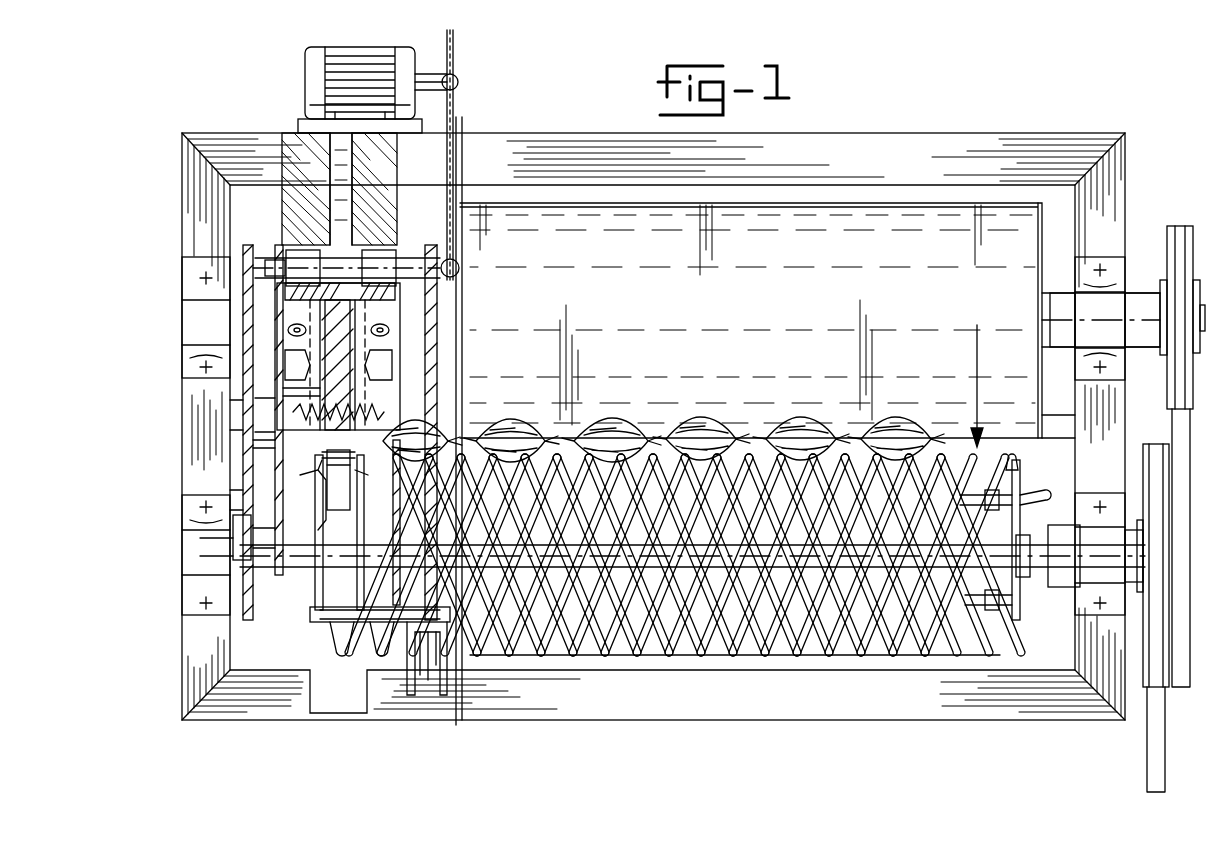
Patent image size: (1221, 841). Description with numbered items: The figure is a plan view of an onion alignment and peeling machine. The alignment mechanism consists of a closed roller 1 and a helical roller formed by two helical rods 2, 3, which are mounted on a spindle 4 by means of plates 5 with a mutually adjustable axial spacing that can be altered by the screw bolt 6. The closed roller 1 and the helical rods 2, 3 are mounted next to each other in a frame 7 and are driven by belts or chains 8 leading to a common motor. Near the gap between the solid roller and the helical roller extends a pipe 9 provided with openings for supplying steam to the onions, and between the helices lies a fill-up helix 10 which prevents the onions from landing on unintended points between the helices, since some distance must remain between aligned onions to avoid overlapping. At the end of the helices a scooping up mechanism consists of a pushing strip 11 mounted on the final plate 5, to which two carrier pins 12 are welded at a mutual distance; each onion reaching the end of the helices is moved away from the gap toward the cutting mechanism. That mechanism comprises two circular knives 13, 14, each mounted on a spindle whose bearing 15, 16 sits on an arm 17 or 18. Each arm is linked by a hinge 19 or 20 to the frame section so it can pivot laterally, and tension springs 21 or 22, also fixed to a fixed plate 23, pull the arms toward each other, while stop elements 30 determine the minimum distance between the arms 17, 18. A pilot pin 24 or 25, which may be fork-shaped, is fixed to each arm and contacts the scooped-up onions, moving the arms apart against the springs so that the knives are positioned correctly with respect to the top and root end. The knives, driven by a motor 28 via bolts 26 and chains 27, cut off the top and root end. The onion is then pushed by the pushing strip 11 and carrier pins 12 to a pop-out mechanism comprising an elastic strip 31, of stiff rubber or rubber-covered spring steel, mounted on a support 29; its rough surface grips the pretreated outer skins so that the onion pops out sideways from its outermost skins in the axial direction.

The closed roller 1 is at (905, 215).
The helical rod 2 is at (938, 660).
The helical rod 3 is at (968, 655).
The spindle 4 is at (628, 655).
The plates 5 is at (1012, 605).
The screw bolt 6 is at (742, 440).
The frame 7 is at (1018, 150).
The belts or chains 8 is at (1160, 512).
The pipe 9 is at (1050, 437).
The fill-up helix 10 is at (694, 665).
The pushing strip 11 is at (242, 462).
The carrier pins 12 is at (312, 572).
The circular knife 13 is at (345, 588).
The circular knife 14 is at (312, 618).
The bearing 15 is at (218, 542).
The bearing 16 is at (398, 558).
The arm 17 is at (275, 416).
The arm 18 is at (437, 352).
The hinge 19 is at (250, 338).
The hinge 20 is at (437, 325).
The tension spring 21 is at (260, 444).
The tension spring 22 is at (437, 404).
The fixed plate 23 is at (320, 355).
The pilot pin 24 is at (240, 500).
The pilot pin 25 is at (325, 482).
The bolts 26 is at (248, 318).
The chains 27 is at (468, 160).
The motor 28 is at (310, 90).
The support 29 is at (428, 653).
The stop elements 30 is at (290, 392).
The elastic strip 31 is at (368, 622).